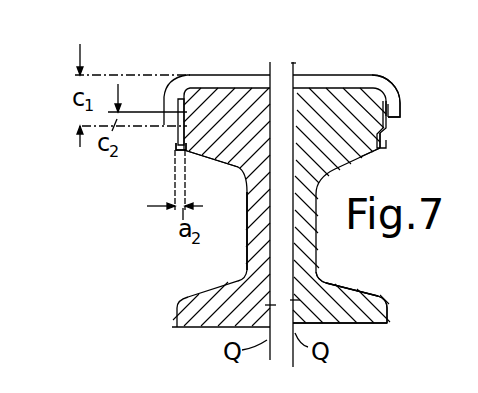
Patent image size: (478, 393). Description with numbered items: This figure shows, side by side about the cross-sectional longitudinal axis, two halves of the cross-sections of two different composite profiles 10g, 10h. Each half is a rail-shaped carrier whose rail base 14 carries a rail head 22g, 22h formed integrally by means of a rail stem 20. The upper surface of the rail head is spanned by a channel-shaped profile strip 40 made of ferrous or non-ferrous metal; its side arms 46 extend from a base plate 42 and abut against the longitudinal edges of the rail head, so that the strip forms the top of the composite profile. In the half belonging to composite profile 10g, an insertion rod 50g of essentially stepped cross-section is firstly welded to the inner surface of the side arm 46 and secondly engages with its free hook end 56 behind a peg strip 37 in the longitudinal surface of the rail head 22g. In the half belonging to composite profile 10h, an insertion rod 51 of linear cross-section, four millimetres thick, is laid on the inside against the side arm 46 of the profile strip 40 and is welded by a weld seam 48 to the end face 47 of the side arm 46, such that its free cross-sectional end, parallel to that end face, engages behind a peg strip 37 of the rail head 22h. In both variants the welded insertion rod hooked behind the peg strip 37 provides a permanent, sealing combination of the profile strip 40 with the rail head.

The profile strip 40 is at (243, 68).
The base plate 42 is at (352, 83).
The insertion rod 51 is at (181, 112).
The end face 47 is at (173, 132).
The weld seam 48 is at (175, 143).
The peg strip 37 is at (173, 150).
The rail head 22h is at (233, 140).
The rail head 22g is at (378, 98).
The insertion rod 50g is at (395, 100).
The side arm 46 is at (402, 115).
The free hook end 56 is at (373, 153).
The composite profile 10g is at (352, 257).
The composite profile 10h is at (236, 236).
The rail stem 20 is at (300, 254).
The rail base 14 is at (378, 310).